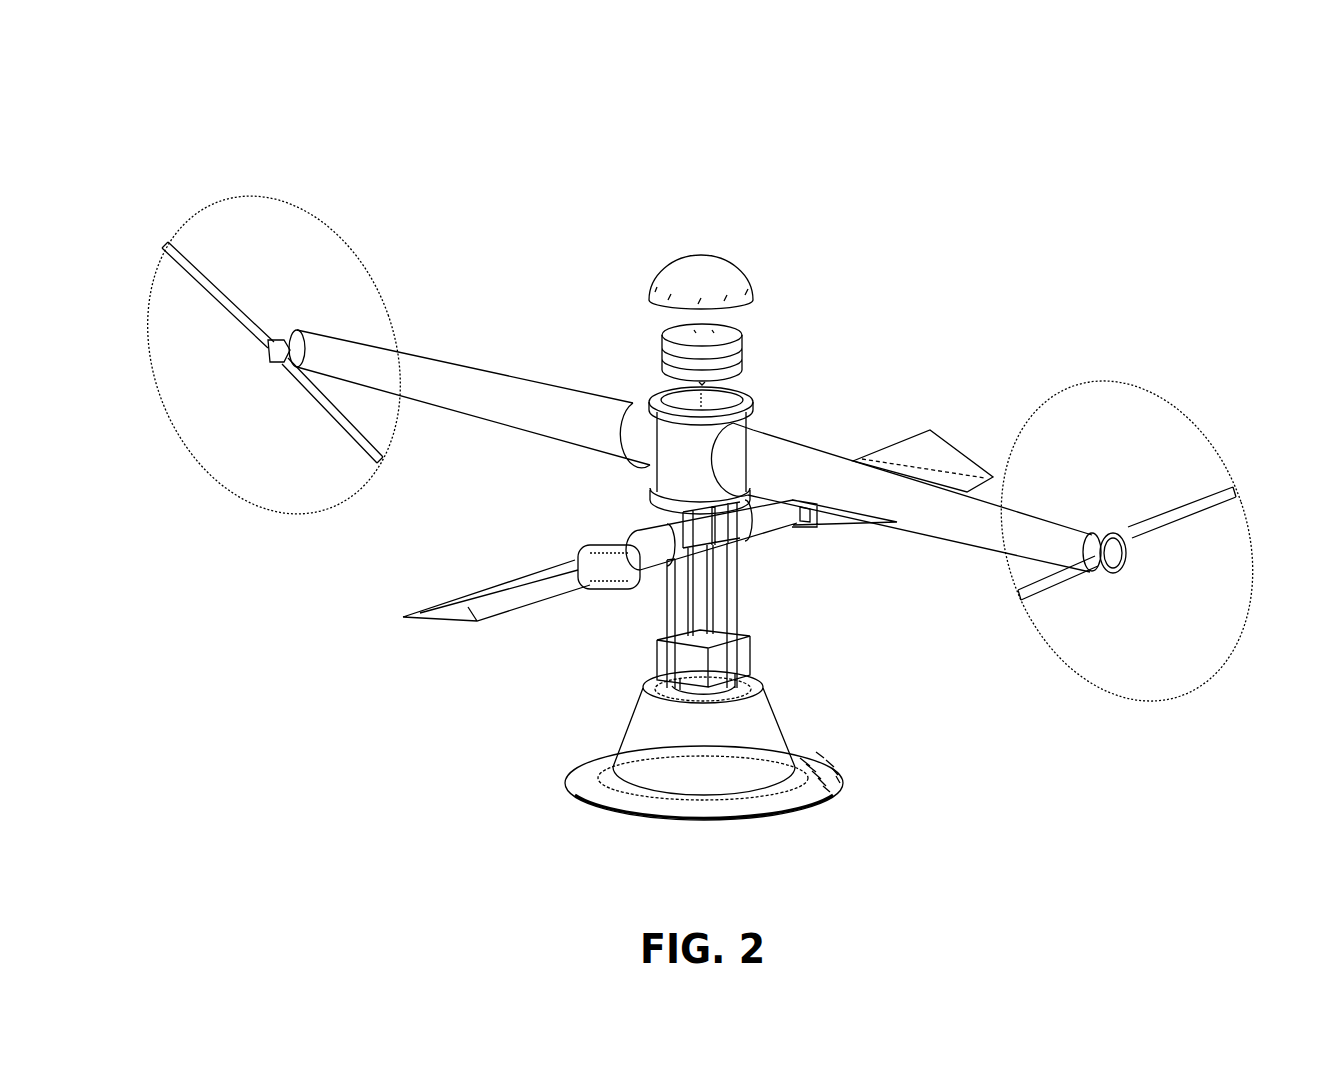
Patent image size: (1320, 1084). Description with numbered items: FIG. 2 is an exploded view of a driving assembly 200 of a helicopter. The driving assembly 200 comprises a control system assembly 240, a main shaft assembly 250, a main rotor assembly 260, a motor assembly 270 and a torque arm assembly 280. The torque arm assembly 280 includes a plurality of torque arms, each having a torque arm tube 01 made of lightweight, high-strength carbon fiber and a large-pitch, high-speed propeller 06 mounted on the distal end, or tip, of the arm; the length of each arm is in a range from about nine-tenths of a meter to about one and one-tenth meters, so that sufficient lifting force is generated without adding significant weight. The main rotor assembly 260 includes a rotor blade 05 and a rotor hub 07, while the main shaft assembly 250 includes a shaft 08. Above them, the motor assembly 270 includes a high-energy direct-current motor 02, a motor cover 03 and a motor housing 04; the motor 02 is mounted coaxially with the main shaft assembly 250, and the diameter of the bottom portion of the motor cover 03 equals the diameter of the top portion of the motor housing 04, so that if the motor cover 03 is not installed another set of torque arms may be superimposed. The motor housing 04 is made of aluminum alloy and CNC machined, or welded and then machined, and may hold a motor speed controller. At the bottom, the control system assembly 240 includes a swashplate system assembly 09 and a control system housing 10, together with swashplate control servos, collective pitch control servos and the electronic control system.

The driving assembly 200 is at (201, 109).
The torque arm tube 01 is at (510, 380).
The high-energy direct-current (DC) motor 02 is at (660, 333).
The motor cover 03 is at (745, 280).
The motor housing 04 is at (750, 398).
The rotor blade 05 is at (930, 423).
The propeller 06 is at (1167, 513).
The rotor hub 07 is at (670, 550).
The shaft 08 is at (700, 603).
The swashplate system assembly 09 is at (660, 648).
The control system housing 10 is at (770, 717).
The control system assembly 240 is at (812, 704).
The main shaft assembly 250 is at (779, 616).
The main rotor assembly 260 is at (375, 623).
The motor assembly 270 is at (717, 226).
The torque arm assembly 280 is at (468, 447).